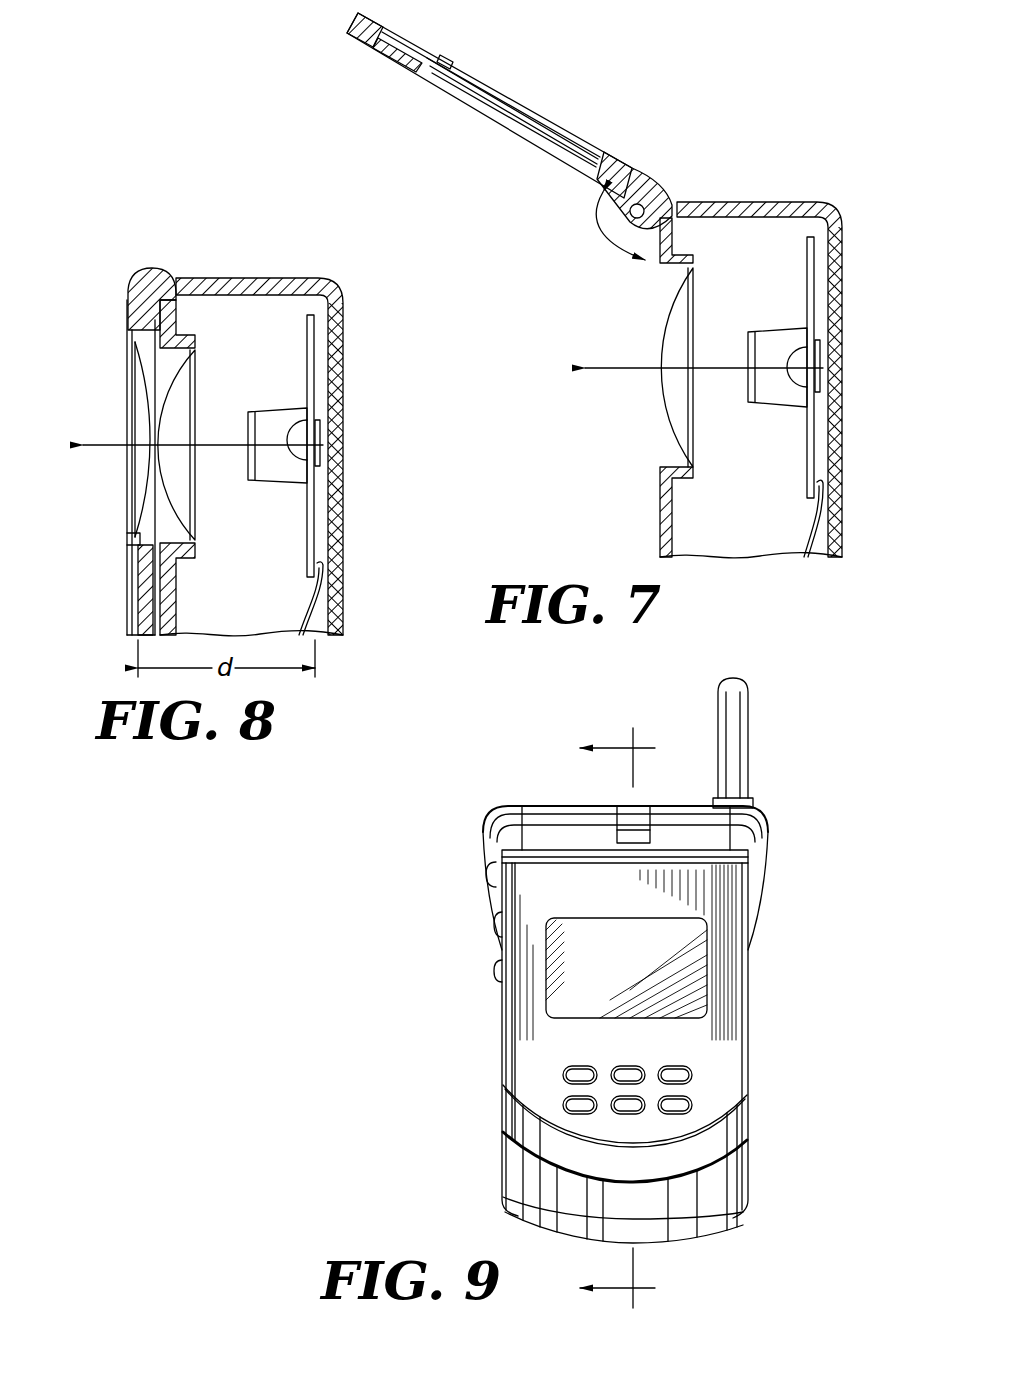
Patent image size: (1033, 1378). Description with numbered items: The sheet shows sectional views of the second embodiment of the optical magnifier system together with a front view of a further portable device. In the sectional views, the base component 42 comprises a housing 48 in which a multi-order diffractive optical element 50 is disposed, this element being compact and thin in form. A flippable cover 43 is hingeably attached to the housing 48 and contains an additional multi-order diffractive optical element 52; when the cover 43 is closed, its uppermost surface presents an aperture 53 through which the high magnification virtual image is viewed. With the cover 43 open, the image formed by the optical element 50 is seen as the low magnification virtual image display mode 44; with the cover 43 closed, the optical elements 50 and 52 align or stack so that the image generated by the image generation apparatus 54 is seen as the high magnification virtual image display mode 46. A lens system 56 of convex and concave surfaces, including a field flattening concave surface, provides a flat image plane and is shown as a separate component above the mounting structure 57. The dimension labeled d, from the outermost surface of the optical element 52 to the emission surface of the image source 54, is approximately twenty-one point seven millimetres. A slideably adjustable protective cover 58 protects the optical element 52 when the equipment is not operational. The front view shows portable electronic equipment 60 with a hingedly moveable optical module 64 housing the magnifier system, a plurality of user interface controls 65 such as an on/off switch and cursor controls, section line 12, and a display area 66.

In FIG. 9, the section line 12 is at (600, 1018).
In FIG. 7, the base component 42 is at (826, 192).
In FIG. 8, the base component 42 is at (352, 283).
In FIG. 7, the flippable cover 43 is at (602, 122).
In FIG. 8, the flippable cover 43 is at (118, 348).
In FIG. 7, the low magnification virtual image display mode 44 is at (642, 433).
In FIG. 8, the high magnification virtual image display mode 46 is at (108, 478).
In FIG. 7, the housing 48 is at (840, 274).
In FIG. 8, the housing 48 is at (345, 360).
In FIG. 7, the multi-order diffractive optical element 50 is at (673, 352).
In FIG. 8, the multi-order diffractive optical element 50 is at (180, 403).
In FIG. 7, the additional multi-order diffractive optical element 52 is at (527, 126).
In FIG. 8, the additional multi-order diffractive optical element 52 is at (145, 420).
In FIG. 7, the aperture 53 is at (657, 314).
In FIG. 8, the aperture 53 is at (120, 383).
In FIG. 7, the image generation apparatus 54 is at (822, 363).
In FIG. 8, the image generation apparatus 54 is at (328, 442).
In FIG. 7, the lens system 56 is at (768, 397).
In FIG. 8, the lens system 56 is at (267, 473).
In FIG. 7, the mounting structure 57 is at (811, 267).
In FIG. 8, the mounting structure 57 is at (310, 332).
In FIG. 8, the slideably adjustable protective cover 58 is at (128, 535).
In FIG. 9, the portable electronic equipment 60 is at (444, 1228).
In FIG. 9, the hingedly moveable optical module 64 is at (723, 900).
In FIG. 9, the user interface controls 65 is at (495, 924).
In FIG. 9, the display 66 is at (698, 978).